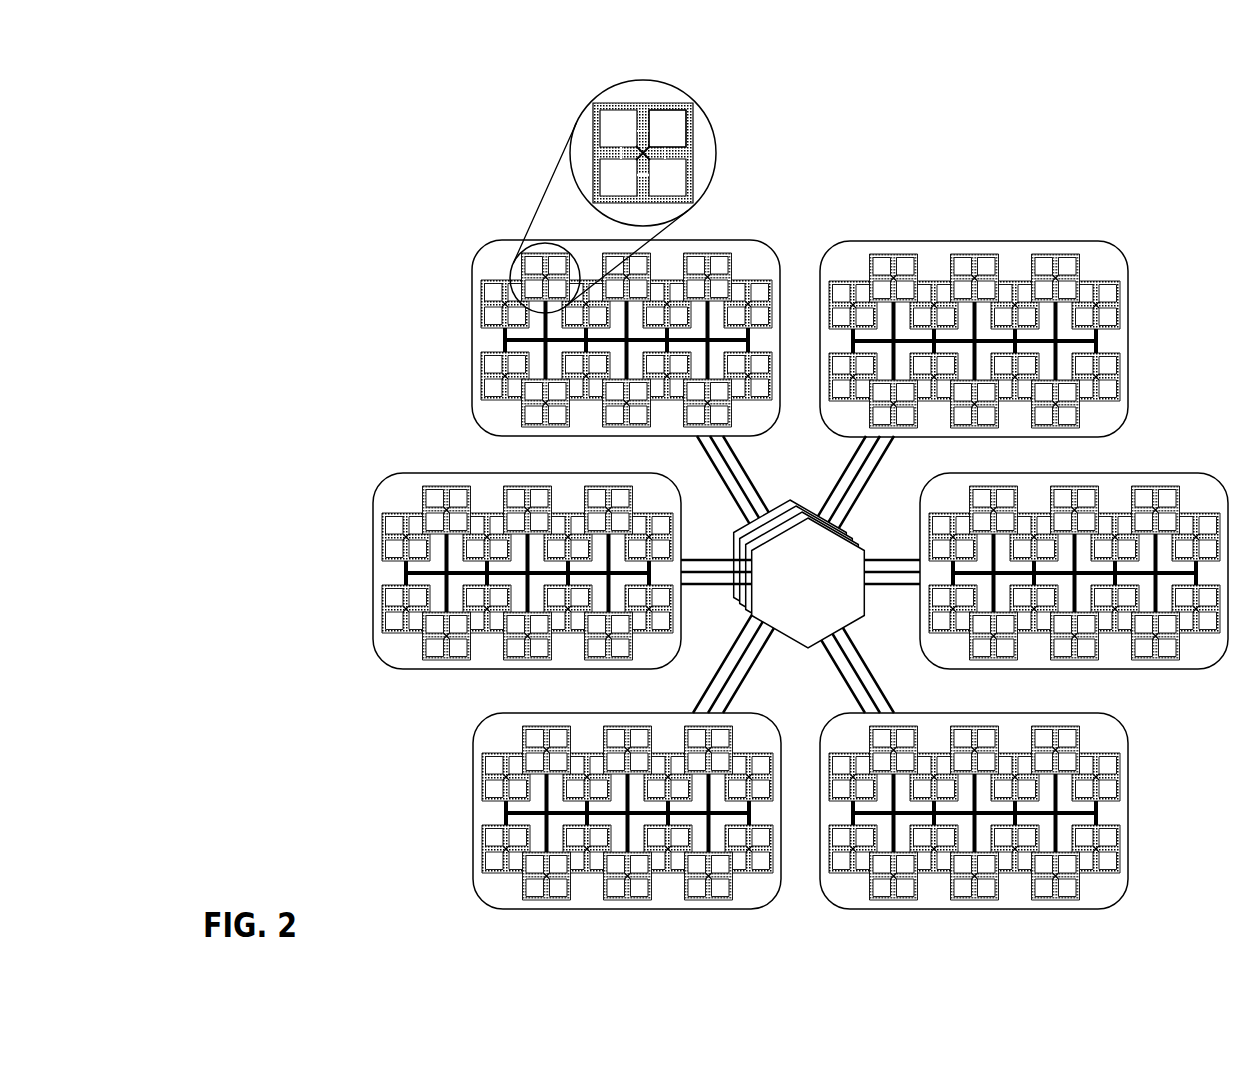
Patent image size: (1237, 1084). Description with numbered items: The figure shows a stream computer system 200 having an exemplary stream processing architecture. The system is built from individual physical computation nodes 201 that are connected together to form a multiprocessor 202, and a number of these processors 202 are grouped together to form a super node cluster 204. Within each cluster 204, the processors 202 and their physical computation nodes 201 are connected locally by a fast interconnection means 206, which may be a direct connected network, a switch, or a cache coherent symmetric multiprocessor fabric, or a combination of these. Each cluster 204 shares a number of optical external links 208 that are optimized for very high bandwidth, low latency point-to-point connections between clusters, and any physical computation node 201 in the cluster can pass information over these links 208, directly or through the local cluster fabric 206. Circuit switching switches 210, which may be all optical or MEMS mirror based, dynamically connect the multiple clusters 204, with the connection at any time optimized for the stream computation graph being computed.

The stream computer system 200 is at (800, 490).
The physical computation node 201 is at (673, 122).
The multiprocessor 202 is at (665, 192).
The super node cluster 204 is at (618, 312).
The fast interconnection means 206 is at (495, 343).
The optical external links 208 is at (703, 692).
The circuit switching switches 210 is at (848, 548).